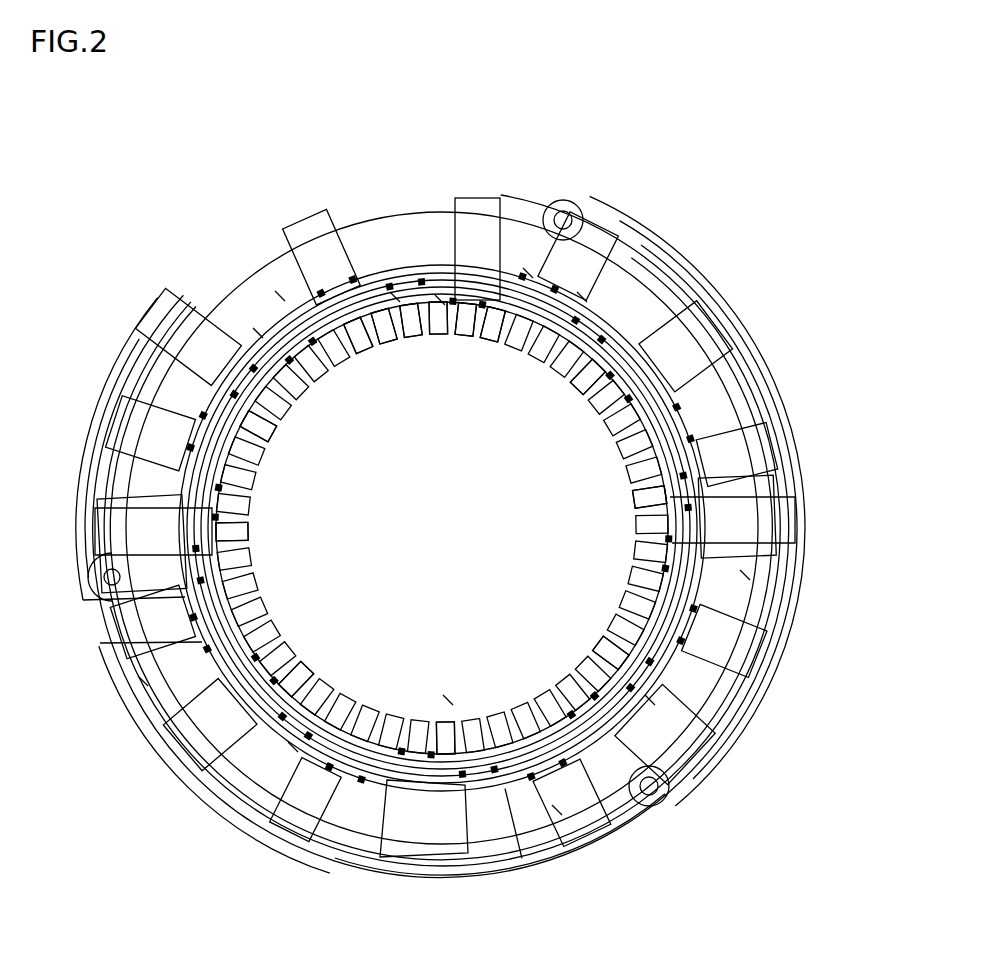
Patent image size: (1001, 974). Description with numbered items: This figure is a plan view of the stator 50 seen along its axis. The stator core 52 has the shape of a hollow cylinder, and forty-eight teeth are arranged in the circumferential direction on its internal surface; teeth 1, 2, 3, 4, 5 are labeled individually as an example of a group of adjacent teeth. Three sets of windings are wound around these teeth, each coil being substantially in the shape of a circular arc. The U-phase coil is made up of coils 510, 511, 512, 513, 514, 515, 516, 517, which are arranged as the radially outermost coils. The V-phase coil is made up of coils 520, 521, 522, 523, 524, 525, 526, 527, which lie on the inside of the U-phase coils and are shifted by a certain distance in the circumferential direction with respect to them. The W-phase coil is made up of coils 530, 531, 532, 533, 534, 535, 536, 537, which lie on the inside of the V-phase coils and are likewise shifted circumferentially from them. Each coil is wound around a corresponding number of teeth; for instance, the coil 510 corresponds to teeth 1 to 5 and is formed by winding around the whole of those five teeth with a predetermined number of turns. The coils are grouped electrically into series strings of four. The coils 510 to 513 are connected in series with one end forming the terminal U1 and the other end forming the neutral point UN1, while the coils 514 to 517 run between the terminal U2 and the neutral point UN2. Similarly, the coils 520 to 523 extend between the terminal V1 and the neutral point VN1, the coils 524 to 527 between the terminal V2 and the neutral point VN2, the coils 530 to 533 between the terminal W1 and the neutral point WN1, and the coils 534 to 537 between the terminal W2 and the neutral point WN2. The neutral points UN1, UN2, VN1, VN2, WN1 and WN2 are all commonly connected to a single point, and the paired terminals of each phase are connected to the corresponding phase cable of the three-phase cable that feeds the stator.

The tooth 1 is at (490, 327).
The tooth 2 is at (464, 327).
The tooth 3 is at (438, 327).
The tooth 4 is at (411, 330).
The tooth 5 is at (386, 335).
The stator 50 is at (451, 112).
The stator core 52 is at (700, 377).
The coil 510 is at (470, 260).
The coil 511 is at (300, 295).
The coil 512 is at (137, 440).
The coil 513 is at (187, 777).
The coil 514 is at (367, 820).
The coil 515 is at (613, 820).
The coil 516 is at (757, 480).
The coil 517 is at (597, 248).
The coil 520 is at (335, 288).
The coil 521 is at (140, 397).
The coil 522 is at (137, 615).
The coil 523 is at (322, 812).
The coil 524 is at (513, 810).
The coil 525 is at (735, 645).
The coil 526 is at (677, 408).
The coil 527 is at (540, 300).
The coil 530 is at (273, 432).
The coil 531 is at (212, 529).
The coil 532 is at (313, 663).
The coil 533 is at (443, 750).
The coil 534 is at (640, 668).
The coil 535 is at (670, 497).
The coil 536 is at (573, 387).
The coil 537 is at (357, 347).
The terminal U1 is at (528, 273).
The terminal U2 is at (582, 297).
The terminal V1 is at (395, 297).
The terminal V2 is at (440, 300).
The terminal W1 is at (258, 333).
The terminal W2 is at (280, 296).
The neutral point UN1 is at (143, 681).
The neutral point UN2 is at (557, 810).
The neutral point VN1 is at (293, 747).
The neutral point VN2 is at (650, 700).
The neutral point WN1 is at (448, 700).
The neutral point WN2 is at (745, 575).